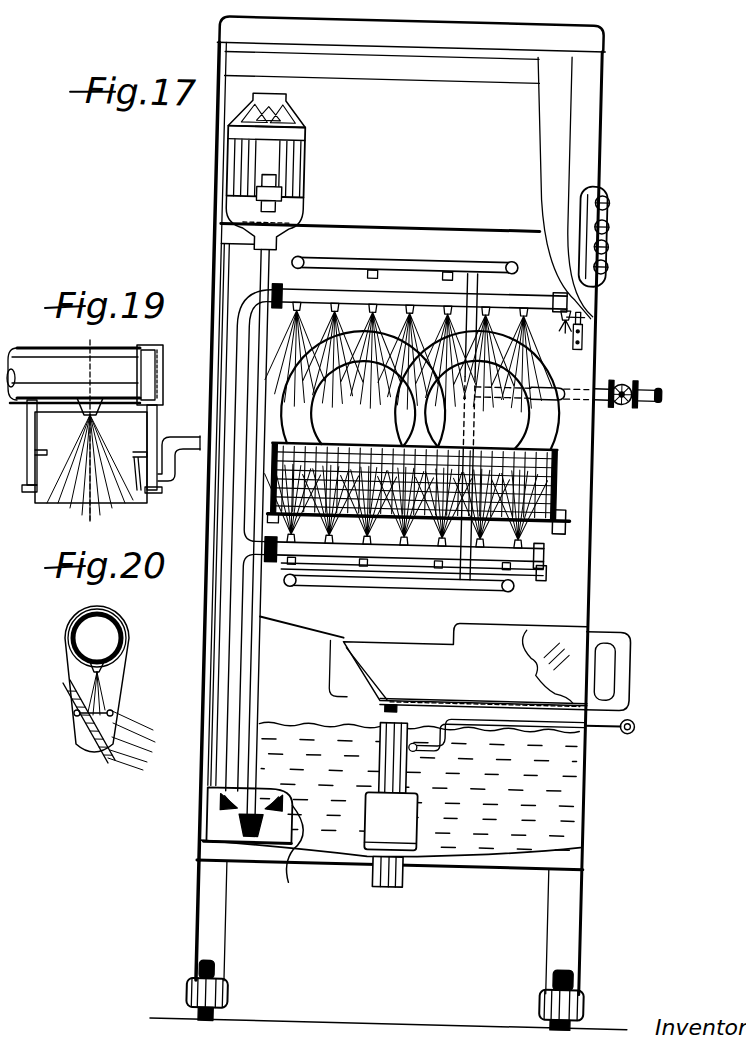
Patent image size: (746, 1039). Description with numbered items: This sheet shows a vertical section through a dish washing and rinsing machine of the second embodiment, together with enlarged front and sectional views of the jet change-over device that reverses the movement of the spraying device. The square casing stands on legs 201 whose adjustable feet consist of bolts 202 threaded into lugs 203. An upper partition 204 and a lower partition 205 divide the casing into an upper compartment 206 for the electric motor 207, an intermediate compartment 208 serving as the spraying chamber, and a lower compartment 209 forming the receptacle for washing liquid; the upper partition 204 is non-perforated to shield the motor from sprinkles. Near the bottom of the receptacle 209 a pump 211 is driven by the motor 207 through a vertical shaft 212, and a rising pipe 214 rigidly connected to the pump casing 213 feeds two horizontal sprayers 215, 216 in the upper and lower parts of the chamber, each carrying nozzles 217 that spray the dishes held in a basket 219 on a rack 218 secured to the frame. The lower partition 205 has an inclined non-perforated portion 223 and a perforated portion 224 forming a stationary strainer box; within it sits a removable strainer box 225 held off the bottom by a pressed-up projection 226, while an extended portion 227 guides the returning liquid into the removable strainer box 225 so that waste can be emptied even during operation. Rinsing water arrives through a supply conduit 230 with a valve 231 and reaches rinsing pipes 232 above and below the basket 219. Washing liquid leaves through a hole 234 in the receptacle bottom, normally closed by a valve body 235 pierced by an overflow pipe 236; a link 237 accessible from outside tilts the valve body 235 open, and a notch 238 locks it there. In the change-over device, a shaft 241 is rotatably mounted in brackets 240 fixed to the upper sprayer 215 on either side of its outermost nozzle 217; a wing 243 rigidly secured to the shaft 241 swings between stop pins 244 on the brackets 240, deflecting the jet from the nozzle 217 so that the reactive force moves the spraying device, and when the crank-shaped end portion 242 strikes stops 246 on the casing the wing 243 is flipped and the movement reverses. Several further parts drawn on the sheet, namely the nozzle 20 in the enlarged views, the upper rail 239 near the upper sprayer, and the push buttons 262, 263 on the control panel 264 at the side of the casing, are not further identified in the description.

In FIG. 19, the spray nozzle 20 is at (90, 433).
In FIG. 17, the legs 201 is at (587, 898).
In FIG. 17, the bolts 202 is at (585, 969).
In FIG. 17, the lugs 203 is at (595, 998).
In FIG. 17, the upper partition 204 is at (462, 229).
In FIG. 17, the lower partition 205 is at (218, 610).
In FIG. 17, the upper compartment 206 is at (381, 109).
In FIG. 17, the electric motor 207 is at (297, 176).
In FIG. 17, the intermediate compartment 208 is at (432, 388).
In FIG. 17, the lower compartment 209 is at (392, 762).
In FIG. 17, the pump 211 is at (220, 825).
In FIG. 17, the shaft 212 is at (271, 640).
In FIG. 17, the pump casing 213 is at (304, 863).
In FIG. 17, the rising pipe 214 is at (218, 703).
In FIG. 17, the upper sprayer 215 is at (533, 293).
In FIG. 19, the upper sprayer 215 is at (50, 352).
In FIG. 20, the upper sprayer 215 is at (80, 620).
In FIG. 17, the lower sprayer 216 is at (529, 563).
In FIG. 17, the nozzles 217 is at (530, 320).
In FIG. 19, the nozzles 217 is at (104, 400).
In FIG. 20, the nozzles 217 is at (104, 666).
In FIG. 17, the rack 218 is at (557, 503).
In FIG. 17, the basket 219 is at (546, 466).
In FIG. 17, the non-perforated portion 223 is at (316, 632).
In FIG. 17, the perforated portion 224 is at (349, 708).
In FIG. 17, the removable strainer box 225 is at (441, 652).
In FIG. 17, the pressed-up projection 226 is at (395, 705).
In FIG. 17, the extended portion 227 is at (346, 639).
In FIG. 17, the supply conduit 230 is at (647, 377).
In FIG. 17, the valve 231 is at (610, 372).
In FIG. 17, the rinsing pipes 232 is at (440, 263).
In FIG. 17, the hole 234 is at (379, 871).
In FIG. 17, the valve body 235 is at (418, 828).
In FIG. 17, the pipe 236 is at (414, 777).
In FIG. 17, the link 237 is at (481, 725).
In FIG. 17, the notch 238 is at (571, 723).
In FIG. 17, the upper guide rail 239 is at (386, 262).
In FIG. 19, the brackets 240 is at (38, 425).
In FIG. 20, the brackets 240 is at (66, 658).
In FIG. 19, the shaft 241 is at (20, 477).
In FIG. 20, the shaft 241 is at (82, 747).
In FIG. 19, the crank-shaped end portion 242 is at (183, 450).
In FIG. 19, the wing 243 is at (113, 500).
In FIG. 20, the wing 243 is at (107, 757).
In FIG. 19, the stop pins 244 is at (133, 503).
In FIG. 20, the stop pins 244 is at (72, 717).
In FIG. 17, the stops 246 is at (580, 315).
In FIG. 17, the push buttons 262 is at (601, 242).
In FIG. 17, the push button 263 is at (601, 198).
In FIG. 17, the control panel 264 is at (592, 182).